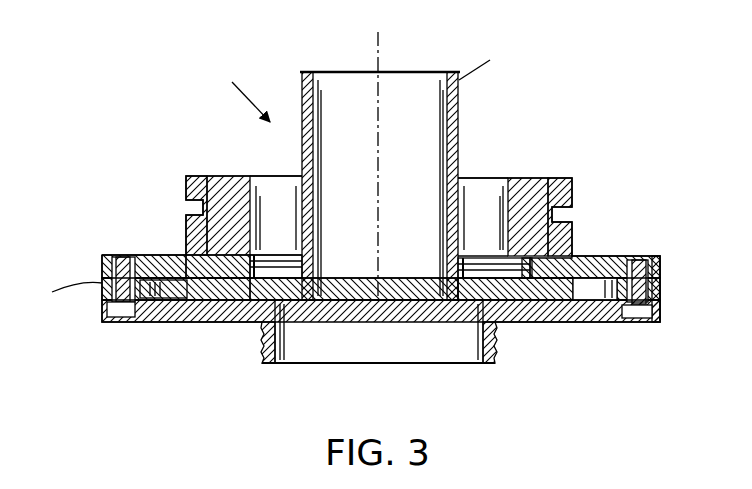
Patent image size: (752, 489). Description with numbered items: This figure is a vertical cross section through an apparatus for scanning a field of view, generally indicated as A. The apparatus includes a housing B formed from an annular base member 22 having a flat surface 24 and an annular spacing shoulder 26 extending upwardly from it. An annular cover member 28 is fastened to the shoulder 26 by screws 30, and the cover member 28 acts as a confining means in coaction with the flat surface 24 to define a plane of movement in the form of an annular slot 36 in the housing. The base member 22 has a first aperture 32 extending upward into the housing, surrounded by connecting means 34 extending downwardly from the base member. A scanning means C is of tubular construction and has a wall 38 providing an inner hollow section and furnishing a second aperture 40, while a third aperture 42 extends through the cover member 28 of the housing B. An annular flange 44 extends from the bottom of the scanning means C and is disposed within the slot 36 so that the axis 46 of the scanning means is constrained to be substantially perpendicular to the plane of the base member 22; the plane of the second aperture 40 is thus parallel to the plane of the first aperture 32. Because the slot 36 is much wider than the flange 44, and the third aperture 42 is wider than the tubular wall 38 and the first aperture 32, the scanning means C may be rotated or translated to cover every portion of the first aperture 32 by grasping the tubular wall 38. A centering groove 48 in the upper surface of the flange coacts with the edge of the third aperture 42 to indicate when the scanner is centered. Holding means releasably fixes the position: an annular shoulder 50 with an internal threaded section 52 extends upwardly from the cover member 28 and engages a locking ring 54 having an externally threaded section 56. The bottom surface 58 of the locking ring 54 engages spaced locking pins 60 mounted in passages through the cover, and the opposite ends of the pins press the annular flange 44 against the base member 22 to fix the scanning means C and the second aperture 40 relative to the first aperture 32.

The annular base member 22 is at (614, 322).
The flat surface 24 is at (585, 299).
The annular spacing shoulder 26 is at (661, 296).
The annular cover member 28 is at (624, 262).
The screws 30 is at (118, 308).
The first aperture 32 is at (276, 333).
The connecting means 34 is at (494, 355).
The annular slot 36 is at (173, 288).
The tubular wall 38 is at (459, 110).
The second aperture 40 is at (306, 282).
The third aperture 42 is at (258, 269).
The annular flange 44 is at (200, 305).
The axis 46 is at (379, 52).
The centering groove 48 is at (246, 318).
The annular shoulder 50 is at (198, 230).
The internal threaded section 52 is at (222, 200).
The locking ring 54 is at (560, 180).
The externally threaded section 56 is at (560, 222).
The bottom surface 58 is at (462, 266).
The locking pins 60 is at (575, 260).
The apparatus for scanning a field of view A is at (242, 87).
The housing B is at (68, 291).
The scanning means C is at (484, 58).